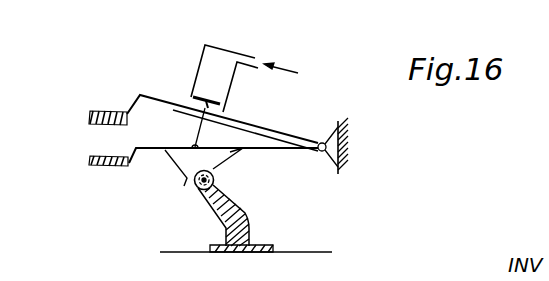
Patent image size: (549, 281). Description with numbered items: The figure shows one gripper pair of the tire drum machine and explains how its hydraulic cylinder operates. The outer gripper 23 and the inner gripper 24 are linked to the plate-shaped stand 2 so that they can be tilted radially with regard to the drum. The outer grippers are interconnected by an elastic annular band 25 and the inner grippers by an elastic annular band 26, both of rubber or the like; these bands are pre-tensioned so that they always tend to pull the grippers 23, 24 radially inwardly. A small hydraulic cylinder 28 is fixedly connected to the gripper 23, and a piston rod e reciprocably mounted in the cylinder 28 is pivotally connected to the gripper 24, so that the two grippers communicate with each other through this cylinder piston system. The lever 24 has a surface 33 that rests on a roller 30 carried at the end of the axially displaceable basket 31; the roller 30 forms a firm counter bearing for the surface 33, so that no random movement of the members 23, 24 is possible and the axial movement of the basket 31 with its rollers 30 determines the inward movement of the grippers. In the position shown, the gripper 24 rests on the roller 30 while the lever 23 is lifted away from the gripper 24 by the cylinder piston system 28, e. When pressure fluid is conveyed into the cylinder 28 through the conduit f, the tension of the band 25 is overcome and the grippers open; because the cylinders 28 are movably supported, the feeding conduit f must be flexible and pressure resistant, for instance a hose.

The stand 2 is at (347, 150).
The outer gripper 23 is at (155, 93).
The inner gripper 24 is at (148, 152).
The elastic annular band 25 is at (88, 118).
The elastic annular band 26 is at (88, 161).
The hydraulic cylinder 28 is at (220, 82).
The roller 30 is at (216, 178).
The basket 31 is at (245, 230).
The surface 33 is at (204, 182).
The piston rod e is at (197, 131).
The conduit f is at (257, 58).